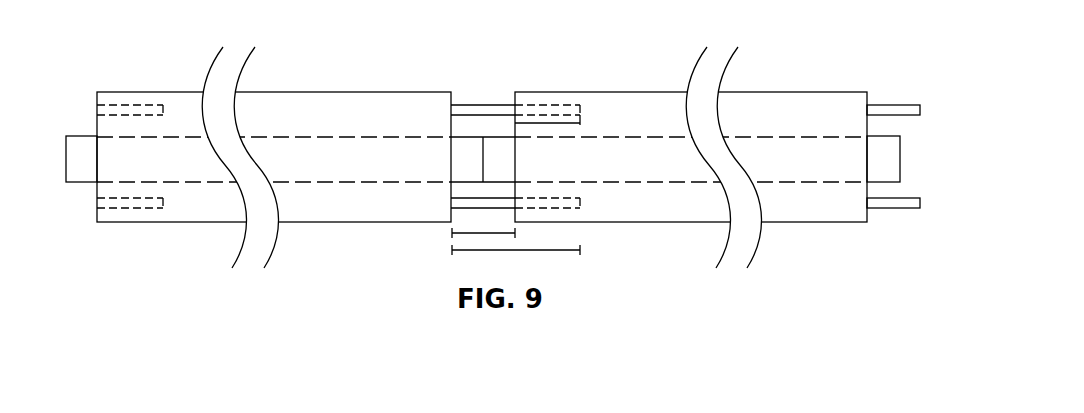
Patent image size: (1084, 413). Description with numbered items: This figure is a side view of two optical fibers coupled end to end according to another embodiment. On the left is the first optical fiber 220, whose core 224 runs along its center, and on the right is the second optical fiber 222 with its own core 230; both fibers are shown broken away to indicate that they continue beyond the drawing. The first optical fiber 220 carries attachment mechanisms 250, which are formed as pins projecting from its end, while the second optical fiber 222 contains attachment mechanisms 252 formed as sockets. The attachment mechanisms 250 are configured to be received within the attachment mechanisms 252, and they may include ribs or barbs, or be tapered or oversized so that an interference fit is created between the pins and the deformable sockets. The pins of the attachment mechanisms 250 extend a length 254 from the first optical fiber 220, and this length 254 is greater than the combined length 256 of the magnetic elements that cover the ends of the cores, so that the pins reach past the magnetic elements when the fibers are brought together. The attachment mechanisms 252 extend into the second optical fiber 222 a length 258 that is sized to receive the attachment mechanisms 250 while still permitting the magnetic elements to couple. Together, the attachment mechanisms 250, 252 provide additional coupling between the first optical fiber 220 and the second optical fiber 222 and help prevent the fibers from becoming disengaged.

The first optical fiber 220 is at (137, 88).
The second optical fiber 222 is at (604, 88).
The core 224 is at (177, 138).
The core 230 is at (603, 135).
The attachment mechanisms 250 is at (467, 110).
The attachment mechanisms 252 is at (547, 105).
The length 254 is at (558, 252).
The combined length 256 is at (455, 233).
The length 258 is at (542, 125).